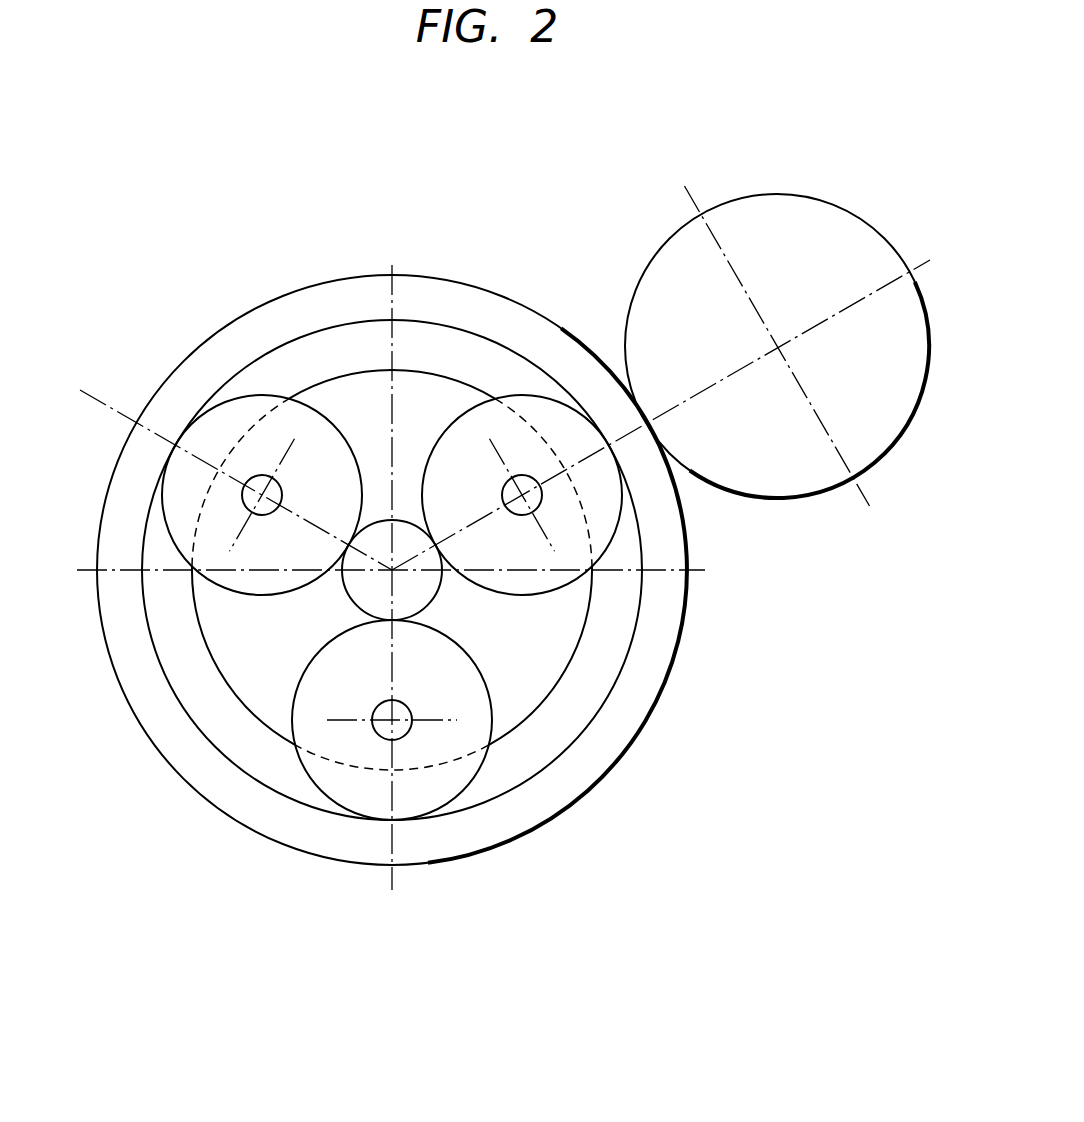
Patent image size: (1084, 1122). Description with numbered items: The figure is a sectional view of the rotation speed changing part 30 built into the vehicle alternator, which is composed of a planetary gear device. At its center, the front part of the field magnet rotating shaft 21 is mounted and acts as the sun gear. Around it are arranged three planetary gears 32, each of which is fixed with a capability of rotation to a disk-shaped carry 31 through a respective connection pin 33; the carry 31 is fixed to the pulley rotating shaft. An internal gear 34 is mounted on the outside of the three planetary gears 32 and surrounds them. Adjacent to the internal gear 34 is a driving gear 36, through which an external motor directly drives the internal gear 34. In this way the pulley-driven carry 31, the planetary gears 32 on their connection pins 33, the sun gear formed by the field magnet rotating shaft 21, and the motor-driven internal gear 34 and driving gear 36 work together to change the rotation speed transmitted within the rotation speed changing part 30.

The field magnet rotating shaft 21 is at (410, 545).
The rotation speed changing part 30 is at (582, 310).
The carry 31 is at (262, 662).
The planetary gear 32 is at (227, 432).
The connection pin 33 is at (255, 497).
The internal gear 34 is at (623, 730).
The driving gear 36 is at (878, 435).